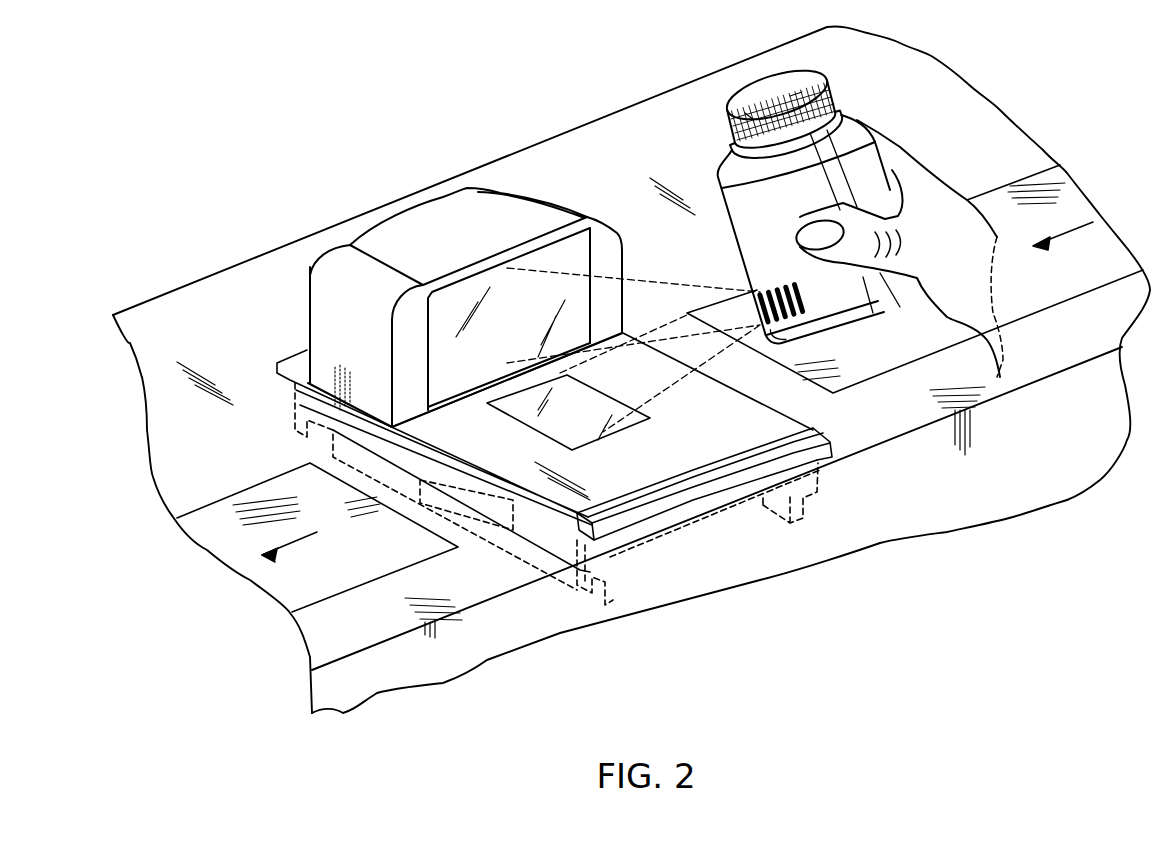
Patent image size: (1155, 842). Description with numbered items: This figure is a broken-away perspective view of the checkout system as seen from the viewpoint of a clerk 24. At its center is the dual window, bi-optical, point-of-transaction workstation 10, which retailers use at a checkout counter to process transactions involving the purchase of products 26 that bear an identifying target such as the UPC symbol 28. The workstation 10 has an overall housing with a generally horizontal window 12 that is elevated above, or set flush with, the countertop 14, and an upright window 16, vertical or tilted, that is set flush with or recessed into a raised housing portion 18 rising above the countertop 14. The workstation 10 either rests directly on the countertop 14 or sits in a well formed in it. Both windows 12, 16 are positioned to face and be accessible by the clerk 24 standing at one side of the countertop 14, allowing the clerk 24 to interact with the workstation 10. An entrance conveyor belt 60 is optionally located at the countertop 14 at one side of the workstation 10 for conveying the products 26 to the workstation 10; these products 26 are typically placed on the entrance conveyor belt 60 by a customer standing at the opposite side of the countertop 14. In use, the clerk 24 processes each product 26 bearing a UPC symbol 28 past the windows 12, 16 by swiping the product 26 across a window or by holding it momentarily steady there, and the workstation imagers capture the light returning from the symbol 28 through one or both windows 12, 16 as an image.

The point-of-transaction workstation 10 is at (568, 177).
The horizontal window 12 is at (537, 422).
The countertop 14 is at (877, 433).
The upright window 16 is at (460, 293).
The raised housing portion 18 is at (490, 307).
The clerk 24 is at (947, 193).
The product 26 is at (815, 202).
The UPC symbol 28 is at (798, 297).
The entrance conveyor belt 60 is at (1080, 193).